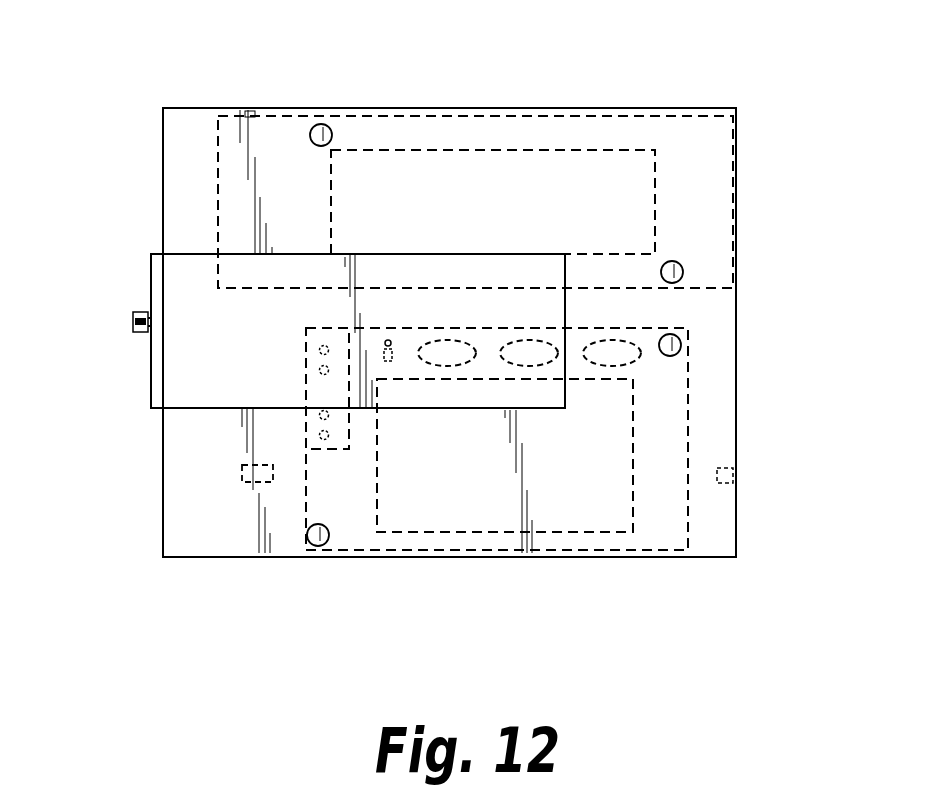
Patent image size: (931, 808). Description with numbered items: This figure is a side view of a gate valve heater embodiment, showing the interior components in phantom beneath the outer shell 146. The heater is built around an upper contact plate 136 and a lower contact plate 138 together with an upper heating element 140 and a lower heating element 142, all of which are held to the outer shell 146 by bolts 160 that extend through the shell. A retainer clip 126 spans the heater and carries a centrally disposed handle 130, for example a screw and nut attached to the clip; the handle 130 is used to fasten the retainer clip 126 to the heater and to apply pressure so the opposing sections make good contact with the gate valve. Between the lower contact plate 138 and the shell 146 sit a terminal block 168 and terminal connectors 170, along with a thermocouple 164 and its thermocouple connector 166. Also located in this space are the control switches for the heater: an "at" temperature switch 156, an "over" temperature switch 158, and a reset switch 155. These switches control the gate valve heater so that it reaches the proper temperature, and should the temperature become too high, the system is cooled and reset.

The retainer clip 126 is at (190, 395).
The handle 130 is at (140, 312).
The upper contact plate 136 is at (720, 150).
The lower contact plate 138 is at (672, 496).
The upper heating element 140 is at (640, 198).
The lower heating element 142 is at (617, 517).
The outer shell 146 is at (203, 108).
The reset switch 155 is at (635, 360).
The "at" temperature switch 156 is at (555, 345).
The "over" temperature switch 158 is at (470, 347).
The bolts 160 is at (325, 124).
The thermocouple 164 is at (395, 357).
The thermocouple connector 166 is at (389, 338).
The terminal block 168 is at (306, 372).
The terminal connectors 170 is at (306, 350).